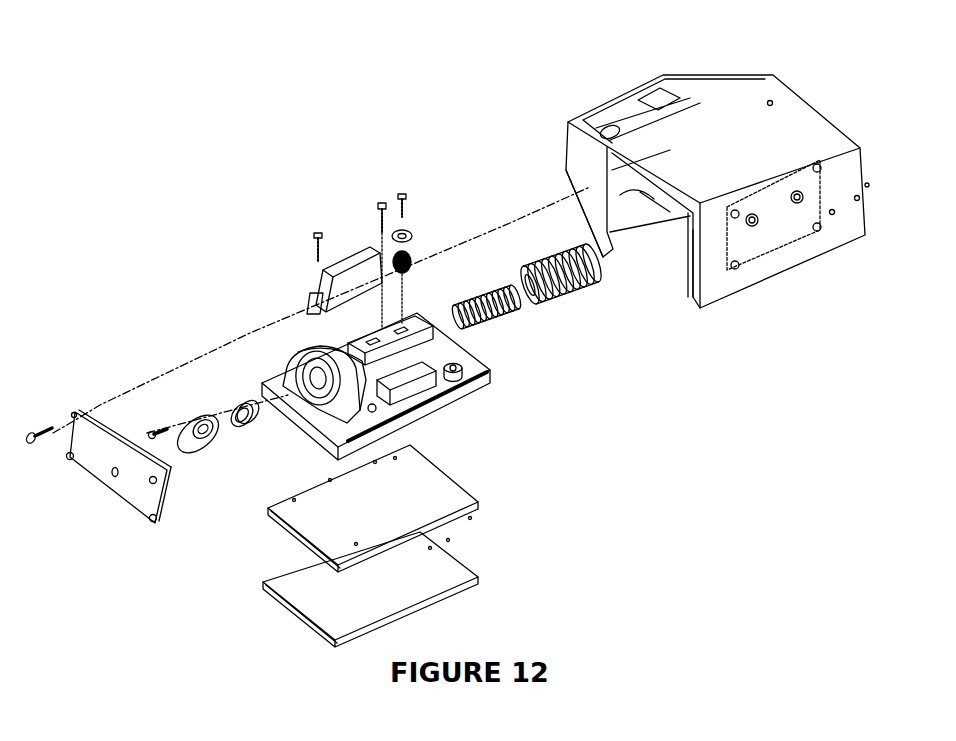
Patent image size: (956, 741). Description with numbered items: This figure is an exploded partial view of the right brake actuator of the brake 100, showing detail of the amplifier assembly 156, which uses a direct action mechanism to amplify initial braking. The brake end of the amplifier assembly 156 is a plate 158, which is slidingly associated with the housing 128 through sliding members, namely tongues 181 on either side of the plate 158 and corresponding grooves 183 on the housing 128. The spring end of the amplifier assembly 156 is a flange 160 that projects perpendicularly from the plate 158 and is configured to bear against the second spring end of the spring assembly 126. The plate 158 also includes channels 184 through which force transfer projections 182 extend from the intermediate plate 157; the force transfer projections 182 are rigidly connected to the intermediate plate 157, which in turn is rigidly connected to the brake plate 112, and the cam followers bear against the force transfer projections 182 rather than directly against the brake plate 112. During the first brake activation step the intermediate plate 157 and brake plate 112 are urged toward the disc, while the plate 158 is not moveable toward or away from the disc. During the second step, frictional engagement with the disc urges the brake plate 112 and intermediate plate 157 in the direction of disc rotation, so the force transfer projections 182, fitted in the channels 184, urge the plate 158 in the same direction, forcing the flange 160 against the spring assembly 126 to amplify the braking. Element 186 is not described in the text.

The brake 100 is at (165, 158).
The brake plate 112 is at (293, 607).
The spring assembly 126 is at (472, 337).
The housing 128 is at (805, 98).
The amplifier assembly 156 is at (504, 398).
The intermediate plate 157 is at (270, 518).
The plate 158 is at (313, 440).
The flange 160 is at (307, 357).
The tongues 181 is at (493, 385).
The force transfer projections 182 is at (334, 246).
The grooves 183 is at (610, 252).
The channels 184 is at (347, 350).
The retaining block 186 is at (360, 250).